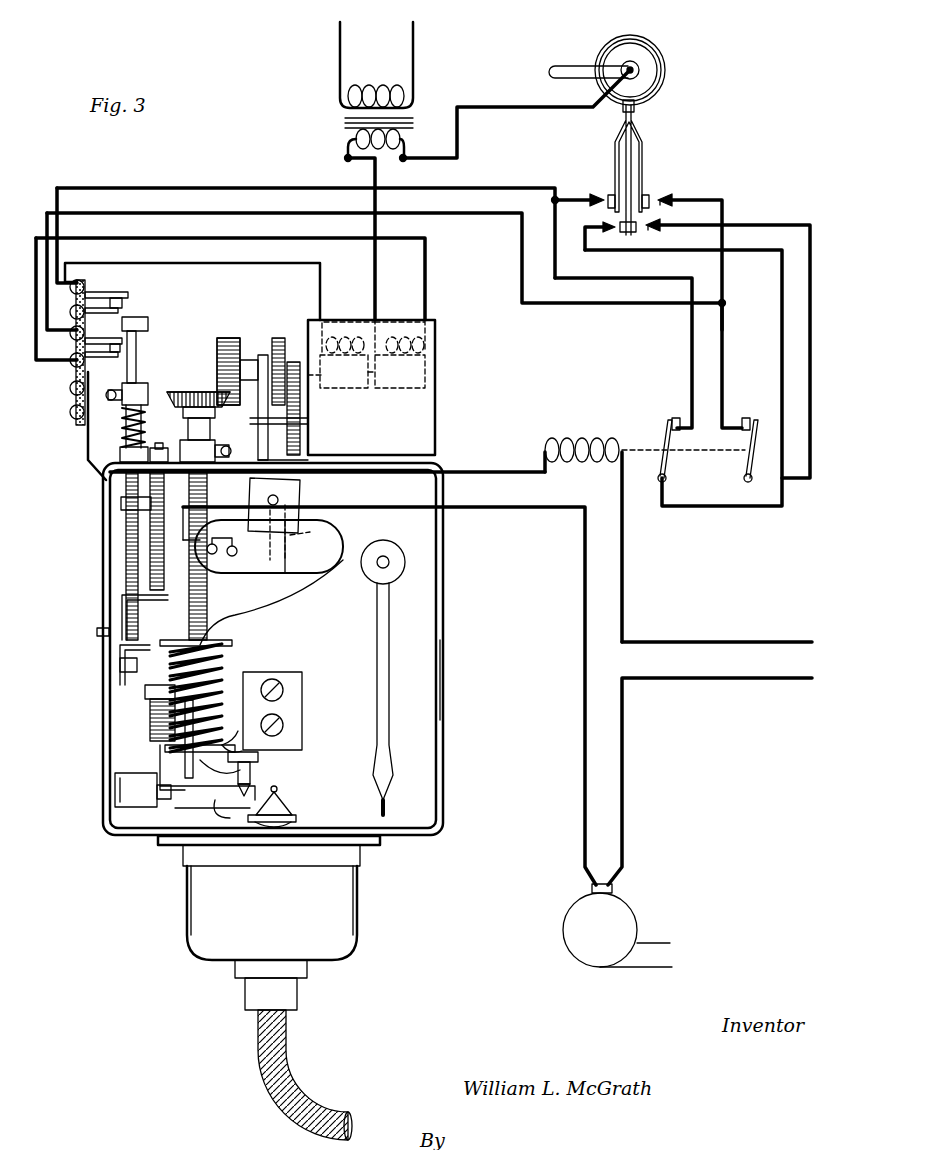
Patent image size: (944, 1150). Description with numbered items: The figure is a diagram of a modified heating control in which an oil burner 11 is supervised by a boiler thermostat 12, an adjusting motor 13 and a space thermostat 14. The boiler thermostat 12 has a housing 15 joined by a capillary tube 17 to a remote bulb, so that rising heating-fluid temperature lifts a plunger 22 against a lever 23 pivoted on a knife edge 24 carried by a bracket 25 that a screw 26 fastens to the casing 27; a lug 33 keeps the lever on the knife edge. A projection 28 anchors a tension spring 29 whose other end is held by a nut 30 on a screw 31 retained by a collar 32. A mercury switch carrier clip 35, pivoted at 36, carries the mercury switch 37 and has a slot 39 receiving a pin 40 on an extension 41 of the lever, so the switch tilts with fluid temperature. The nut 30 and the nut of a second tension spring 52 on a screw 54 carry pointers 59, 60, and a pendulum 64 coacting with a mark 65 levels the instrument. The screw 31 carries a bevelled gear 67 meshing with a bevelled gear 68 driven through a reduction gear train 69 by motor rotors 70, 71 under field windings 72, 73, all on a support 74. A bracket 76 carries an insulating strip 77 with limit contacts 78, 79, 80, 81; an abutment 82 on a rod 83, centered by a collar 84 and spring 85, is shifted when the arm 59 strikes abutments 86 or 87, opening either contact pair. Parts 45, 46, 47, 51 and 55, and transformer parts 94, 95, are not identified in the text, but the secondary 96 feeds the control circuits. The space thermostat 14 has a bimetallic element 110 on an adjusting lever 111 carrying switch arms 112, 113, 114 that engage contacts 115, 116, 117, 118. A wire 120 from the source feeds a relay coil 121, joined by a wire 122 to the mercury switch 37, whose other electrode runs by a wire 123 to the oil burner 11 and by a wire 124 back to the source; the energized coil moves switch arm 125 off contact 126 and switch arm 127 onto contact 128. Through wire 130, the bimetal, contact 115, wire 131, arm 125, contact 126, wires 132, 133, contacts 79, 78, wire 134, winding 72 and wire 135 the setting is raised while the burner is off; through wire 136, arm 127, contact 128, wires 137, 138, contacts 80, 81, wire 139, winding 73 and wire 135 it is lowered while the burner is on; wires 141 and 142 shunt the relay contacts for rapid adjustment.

The oil burner 11 is at (628, 917).
The boiler thermostat 12 is at (108, 836).
The adjusting motor 13 is at (304, 315).
The space thermostat 14 is at (673, 104).
The housing 15 is at (358, 911).
The capillary tube 17 is at (284, 1066).
The plunger 22 is at (296, 824).
The lever 23 is at (288, 793).
The knife edge 24 is at (250, 783).
The bracket 25 is at (306, 700).
The screw 26 is at (284, 686).
The casing 27 is at (444, 680).
The projection 28 is at (200, 806).
The tension spring 29 is at (233, 728).
The nut 30 is at (215, 650).
The screw 31 is at (189, 588).
The collar 32 is at (222, 445).
The lug 33 is at (258, 757).
The mercury switch carrier clip 35 is at (300, 489).
The pivot 36 is at (258, 500).
The mercury switch 37 is at (368, 552).
The slot 39 is at (294, 520).
The pin 40 is at (284, 546).
The extension 41 is at (268, 586).
The solenoid 45 is at (114, 789).
The bracket 46 is at (158, 774).
The plunger rod 47 is at (183, 728).
The coil 51 is at (150, 718).
The tension spring 52 is at (144, 696).
The screw 54 is at (200, 543).
The block 55 is at (156, 444).
The pointer 59 is at (118, 650).
The pointer 60 is at (120, 600).
The pendulum 64 is at (377, 640).
The mark 65 is at (385, 805).
The bevelled gear 67 is at (188, 391).
The bevelled gear 68 is at (220, 350).
The reduction gear train 69 is at (266, 338).
The motor rotor 70 is at (340, 388).
The motor rotor 71 is at (395, 388).
The field winding 72 is at (339, 323).
The field winding 73 is at (396, 324).
The support 74 is at (214, 415).
The bracket 76 is at (86, 458).
The strip of insulating material 77 is at (74, 404).
The contact 78 is at (104, 294).
The contact 79 is at (117, 308).
The contact 80 is at (112, 331).
The contact 81 is at (110, 357).
The abutment 82 is at (148, 322).
The rod 83 is at (136, 356).
The collar 84 is at (146, 392).
The spring 85 is at (124, 416).
The abutment 86 is at (121, 503).
The abutment 87 is at (118, 666).
The transformer core 94 is at (338, 122).
The primary winding 95 is at (374, 94).
The secondary 96 is at (387, 151).
The bimetallic element 110 is at (666, 76).
The adjusting lever 111 is at (556, 67).
The switch arm 112 is at (632, 176).
The switch arm 113 is at (610, 186).
The switch arm 114 is at (649, 186).
The contact 115 is at (616, 233).
The contact 116 is at (650, 228).
The contact 117 is at (593, 202).
The contact 118 is at (662, 202).
The wire 120 is at (720, 642).
The relay coil 121 is at (584, 438).
The wire 122 is at (510, 472).
The wire 123 is at (515, 508).
The wire 124 is at (718, 680).
The switch arm 125 is at (661, 446).
The contact 126 is at (674, 426).
The switch arm 127 is at (742, 442).
The contact 128 is at (744, 428).
The wire 130 is at (514, 107).
The wire 131 is at (640, 250).
The wire 132 is at (690, 362).
The wire 133 is at (477, 188).
The wire 134 is at (191, 264).
The wire 135 is at (372, 272).
The wire 136 is at (752, 226).
The wire 137 is at (724, 342).
The wire 138 is at (515, 303).
The wire 139 is at (428, 252).
The wire 141 is at (555, 198).
The wire 142 is at (724, 208).